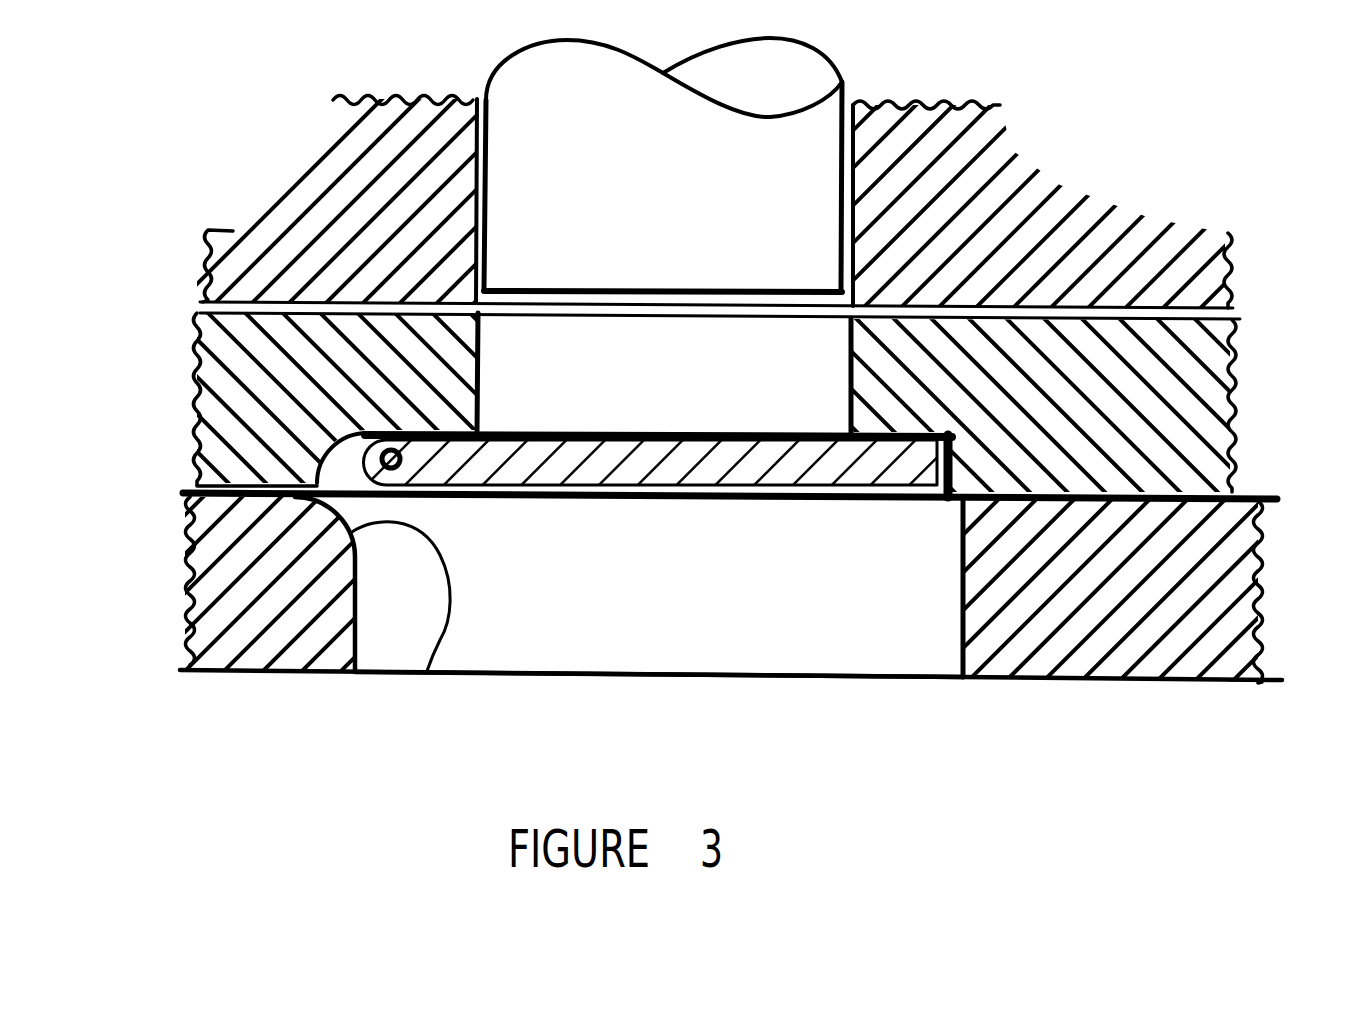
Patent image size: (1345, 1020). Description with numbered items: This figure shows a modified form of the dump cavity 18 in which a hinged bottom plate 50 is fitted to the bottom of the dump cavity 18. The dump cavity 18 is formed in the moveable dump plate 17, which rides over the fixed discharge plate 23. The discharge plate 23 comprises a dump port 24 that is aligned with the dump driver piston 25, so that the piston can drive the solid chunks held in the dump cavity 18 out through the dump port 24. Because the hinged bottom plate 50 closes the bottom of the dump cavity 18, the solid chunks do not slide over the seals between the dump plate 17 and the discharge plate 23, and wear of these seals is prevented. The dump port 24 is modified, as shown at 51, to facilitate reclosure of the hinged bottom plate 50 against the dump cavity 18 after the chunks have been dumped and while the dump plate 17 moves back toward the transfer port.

The moveable dump plate 17 is at (1160, 420).
The dump cavity 18 is at (980, 203).
The fixed discharge plate 23 is at (1180, 603).
The dump port 24 is at (850, 643).
The dump driver piston 25 is at (773, 175).
The hinged bottom plate 50 is at (520, 467).
The dump port modification 51 is at (427, 671).